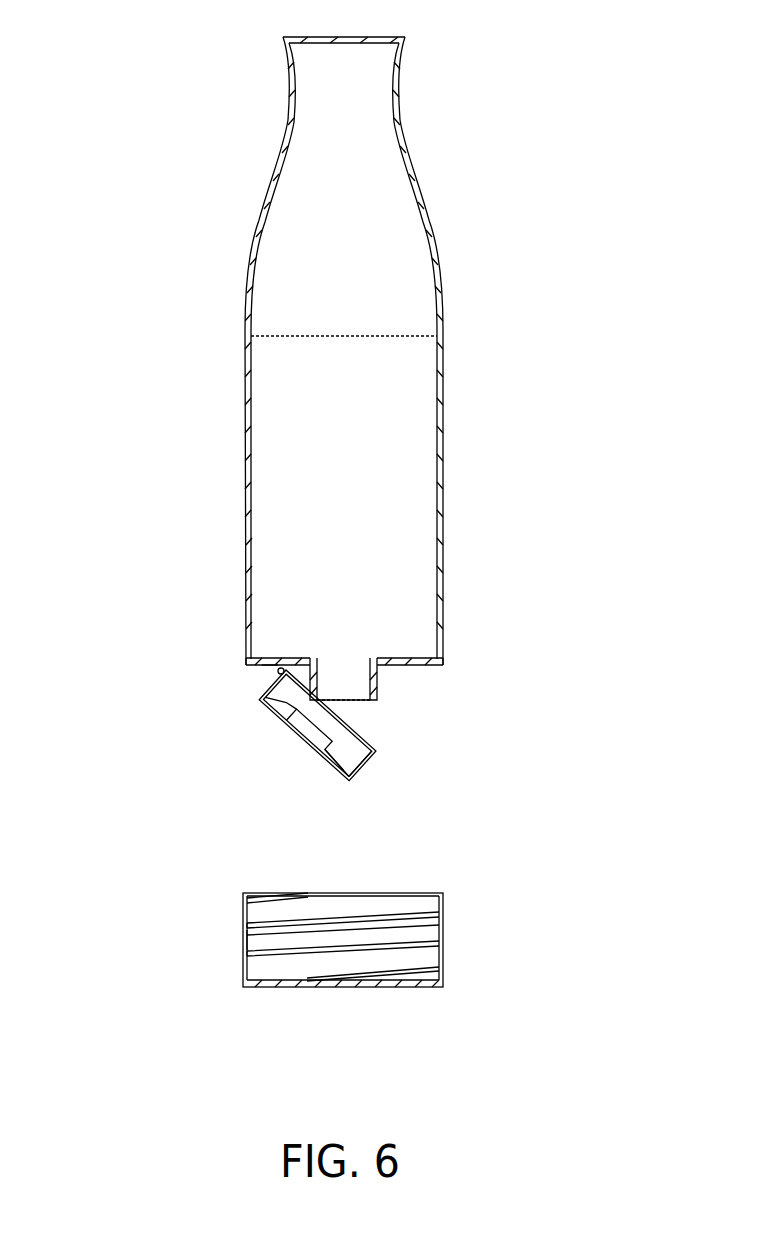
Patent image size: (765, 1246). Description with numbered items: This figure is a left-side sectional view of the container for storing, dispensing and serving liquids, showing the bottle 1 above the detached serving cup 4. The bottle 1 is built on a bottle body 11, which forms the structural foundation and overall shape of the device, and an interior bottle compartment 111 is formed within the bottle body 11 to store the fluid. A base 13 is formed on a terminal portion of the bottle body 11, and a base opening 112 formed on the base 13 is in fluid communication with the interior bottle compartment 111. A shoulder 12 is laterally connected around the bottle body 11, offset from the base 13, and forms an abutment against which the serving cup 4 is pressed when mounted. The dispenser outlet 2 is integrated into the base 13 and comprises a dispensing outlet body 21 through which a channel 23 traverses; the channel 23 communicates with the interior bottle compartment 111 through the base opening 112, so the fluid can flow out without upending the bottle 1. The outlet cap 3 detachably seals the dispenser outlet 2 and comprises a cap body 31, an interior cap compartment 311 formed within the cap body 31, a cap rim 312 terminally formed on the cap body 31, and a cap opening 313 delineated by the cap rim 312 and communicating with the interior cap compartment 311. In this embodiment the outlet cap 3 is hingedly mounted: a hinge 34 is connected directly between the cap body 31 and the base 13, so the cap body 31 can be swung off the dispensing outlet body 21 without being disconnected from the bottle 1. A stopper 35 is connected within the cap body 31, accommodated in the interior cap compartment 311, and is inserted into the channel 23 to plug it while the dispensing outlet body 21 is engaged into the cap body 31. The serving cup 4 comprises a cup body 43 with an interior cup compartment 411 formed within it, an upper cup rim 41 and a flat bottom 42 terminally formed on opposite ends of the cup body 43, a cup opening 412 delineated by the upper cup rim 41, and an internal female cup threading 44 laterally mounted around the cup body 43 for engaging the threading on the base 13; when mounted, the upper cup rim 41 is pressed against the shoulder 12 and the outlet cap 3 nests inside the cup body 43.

The bottle 1 is at (565, 372).
The bottle body 11 is at (437, 442).
The interior bottle compartment 111 is at (328, 292).
The base opening 112 is at (359, 658).
The shoulder 12 is at (245, 645).
The base 13 is at (260, 666).
The dispenser outlet 2 is at (402, 696).
The dispensing outlet body 21 is at (375, 681).
The channel 23 is at (342, 681).
The outlet cap 3 is at (362, 774).
The cap body 31 is at (360, 727).
The interior cap compartment 311 is at (291, 706).
The cap rim 312 is at (382, 745).
The cap opening 313 is at (355, 743).
The hinge 34 is at (278, 673).
The stopper 35 is at (313, 732).
The serving cup 4 is at (443, 930).
The upper cup rim 41 is at (444, 890).
The interior cup compartment 411 is at (393, 936).
The cup opening 412 is at (382, 890).
The flat bottom 42 is at (427, 990).
The cup body 43 is at (335, 903).
The internal female cup threading 44 is at (278, 952).